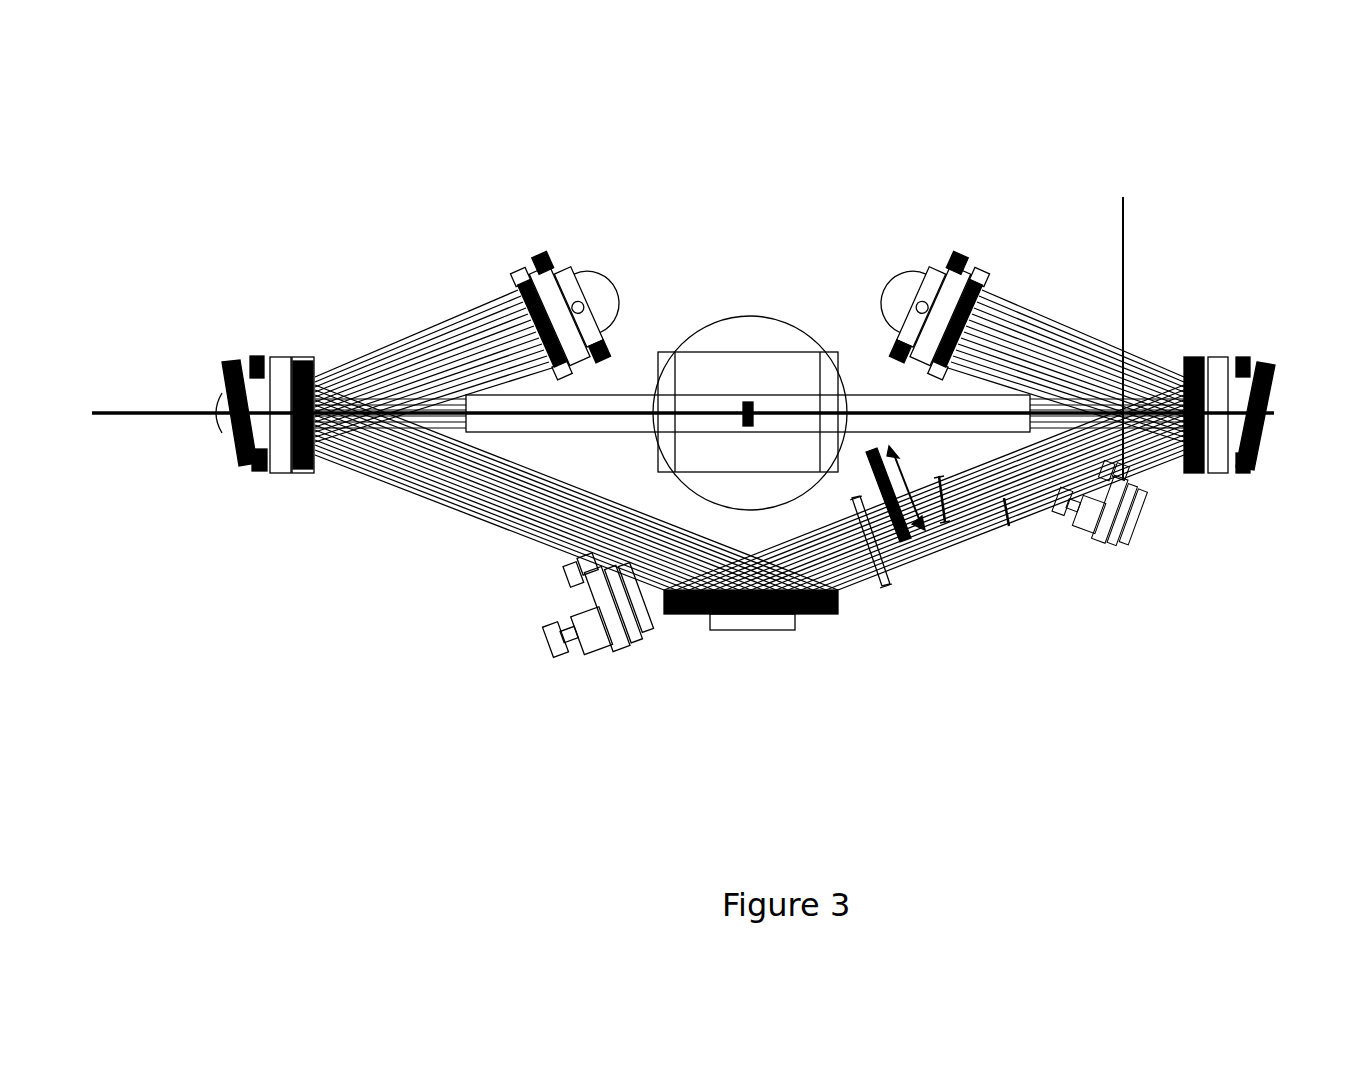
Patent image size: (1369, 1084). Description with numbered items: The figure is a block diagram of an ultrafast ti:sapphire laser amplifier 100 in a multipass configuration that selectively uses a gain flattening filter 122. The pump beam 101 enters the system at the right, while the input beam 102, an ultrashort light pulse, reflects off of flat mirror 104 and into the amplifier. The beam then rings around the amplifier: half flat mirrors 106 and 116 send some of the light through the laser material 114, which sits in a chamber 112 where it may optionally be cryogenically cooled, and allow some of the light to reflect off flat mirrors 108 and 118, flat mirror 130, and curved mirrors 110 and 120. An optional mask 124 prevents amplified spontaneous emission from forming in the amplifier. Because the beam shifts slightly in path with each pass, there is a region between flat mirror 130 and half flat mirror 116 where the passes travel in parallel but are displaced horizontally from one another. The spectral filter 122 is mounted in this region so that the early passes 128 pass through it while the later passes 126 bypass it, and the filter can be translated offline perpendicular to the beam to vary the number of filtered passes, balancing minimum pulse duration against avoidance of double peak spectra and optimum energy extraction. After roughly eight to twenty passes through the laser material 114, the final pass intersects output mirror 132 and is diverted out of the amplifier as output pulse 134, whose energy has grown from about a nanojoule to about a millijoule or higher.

The ultrafast ti:sapphire laser amplifier 100 is at (748, 119).
The pump beam 101 is at (183, 403).
The input beam 102 is at (362, 348).
The flat mirror 104 is at (640, 636).
The half flat mirror 106 is at (305, 471).
The flat mirror 108 is at (243, 461).
The curved mirror 110 is at (527, 280).
The chamber 112 is at (751, 314).
The laser material 114 is at (746, 428).
The half flat mirror 116 is at (1190, 355).
The flat mirror 118 is at (1272, 364).
The curved mirror 120 is at (978, 288).
The gain flattening filter 122 is at (908, 538).
The mask 124 is at (889, 588).
The later passes 126 is at (1010, 523).
The early passes 128 is at (946, 520).
The flat mirror 130 is at (760, 614).
The output mirror 132 is at (1142, 500).
The output pulse 134 is at (1127, 248).